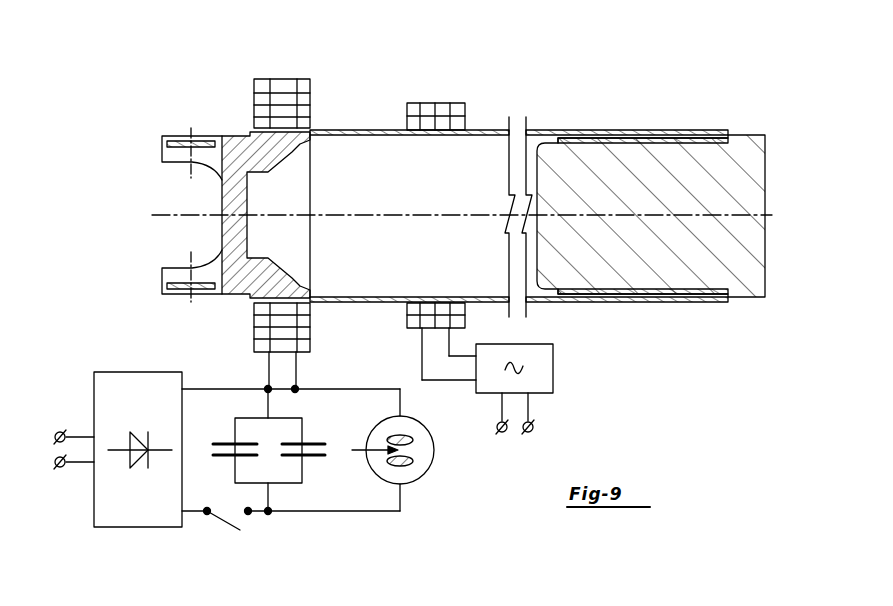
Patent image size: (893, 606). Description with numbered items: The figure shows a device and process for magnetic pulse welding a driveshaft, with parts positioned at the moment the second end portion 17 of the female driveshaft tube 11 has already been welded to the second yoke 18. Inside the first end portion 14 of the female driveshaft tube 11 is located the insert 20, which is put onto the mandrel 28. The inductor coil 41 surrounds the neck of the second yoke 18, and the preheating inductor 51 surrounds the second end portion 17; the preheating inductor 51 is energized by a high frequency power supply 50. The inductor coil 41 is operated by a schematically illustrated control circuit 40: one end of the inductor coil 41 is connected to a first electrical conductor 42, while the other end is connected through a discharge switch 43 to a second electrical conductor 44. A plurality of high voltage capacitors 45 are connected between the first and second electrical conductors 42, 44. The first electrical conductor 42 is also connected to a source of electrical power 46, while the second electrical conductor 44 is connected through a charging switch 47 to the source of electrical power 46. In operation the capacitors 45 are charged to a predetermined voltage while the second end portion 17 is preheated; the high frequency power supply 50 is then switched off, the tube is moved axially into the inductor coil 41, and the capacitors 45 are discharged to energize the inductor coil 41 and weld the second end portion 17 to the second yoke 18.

The female driveshaft tube 11 is at (553, 92).
The first end portion 14 is at (648, 130).
The second end portion 17 is at (346, 130).
The second yoke 18 is at (222, 208).
The insert 20 is at (634, 302).
The mandrel 28 is at (740, 300).
The control circuit 40 is at (135, 358).
The inductor coil 41 is at (278, 80).
The first electrical conductor 42 is at (226, 388).
The discharge switch 43 is at (434, 452).
The second electrical conductor 44 is at (268, 497).
The high voltage capacitors 45 is at (214, 444).
The source of electrical power 46 is at (94, 397).
The charging switch 47 is at (222, 528).
The high frequency power supply 50 is at (553, 368).
The preheating inductor 51 is at (428, 104).